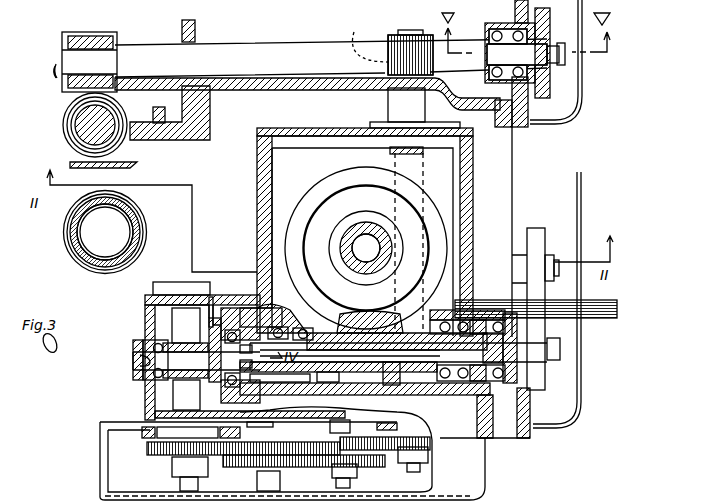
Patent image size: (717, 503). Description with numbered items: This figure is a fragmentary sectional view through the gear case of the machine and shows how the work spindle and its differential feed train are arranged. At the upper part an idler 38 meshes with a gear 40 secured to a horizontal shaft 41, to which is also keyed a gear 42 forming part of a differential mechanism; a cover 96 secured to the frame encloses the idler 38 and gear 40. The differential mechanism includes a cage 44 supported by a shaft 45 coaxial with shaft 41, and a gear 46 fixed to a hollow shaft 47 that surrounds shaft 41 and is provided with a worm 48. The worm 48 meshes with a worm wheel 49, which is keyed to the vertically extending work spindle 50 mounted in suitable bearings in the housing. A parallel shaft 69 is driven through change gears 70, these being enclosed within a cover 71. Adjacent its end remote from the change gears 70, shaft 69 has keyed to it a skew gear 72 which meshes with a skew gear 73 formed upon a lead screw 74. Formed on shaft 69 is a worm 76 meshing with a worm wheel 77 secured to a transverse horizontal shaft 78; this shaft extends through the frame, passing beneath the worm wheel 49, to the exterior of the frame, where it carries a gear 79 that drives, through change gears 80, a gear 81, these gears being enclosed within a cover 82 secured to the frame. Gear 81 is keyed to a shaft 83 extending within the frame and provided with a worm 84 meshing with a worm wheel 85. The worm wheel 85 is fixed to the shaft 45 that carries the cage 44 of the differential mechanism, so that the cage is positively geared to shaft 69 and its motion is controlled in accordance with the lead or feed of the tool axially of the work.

The idler 38 is at (545, 230).
The gear 40 is at (537, 330).
The horizontal shaft 41 is at (381, 324).
The gear 42 is at (255, 308).
The cage 44 is at (215, 318).
The shaft 45 is at (142, 339).
The gear 46 is at (274, 320).
The hollow shaft 47 is at (330, 345).
The worm 48 is at (407, 318).
The worm wheel 49 is at (427, 202).
The work spindle 50 is at (350, 225).
The parallel shaft 69 is at (299, 52).
The change gears 70 is at (540, 93).
The cover 71 is at (582, 117).
The skew gear 72 is at (117, 40).
The skew gear 73 is at (112, 108).
The lead screw 74 is at (85, 122).
The worm 76 is at (396, 36).
The worm wheel 77 is at (363, 39).
The transverse horizontal shaft 78 is at (420, 173).
The gear 79 is at (388, 455).
The change gears 80 is at (288, 468).
The gear 81 is at (147, 455).
The cover 82 is at (100, 478).
The shaft 83 is at (233, 412).
The worm 84 is at (172, 321).
The worm wheel 85 is at (150, 364).
The cover 96 is at (555, 428).